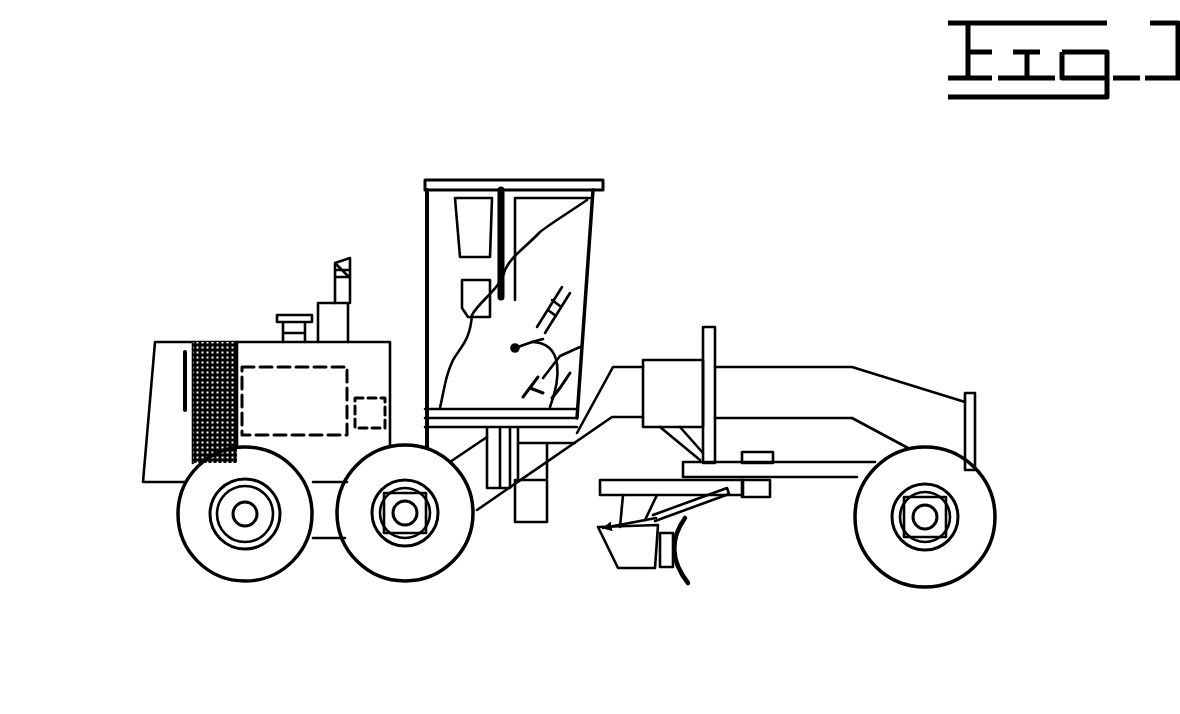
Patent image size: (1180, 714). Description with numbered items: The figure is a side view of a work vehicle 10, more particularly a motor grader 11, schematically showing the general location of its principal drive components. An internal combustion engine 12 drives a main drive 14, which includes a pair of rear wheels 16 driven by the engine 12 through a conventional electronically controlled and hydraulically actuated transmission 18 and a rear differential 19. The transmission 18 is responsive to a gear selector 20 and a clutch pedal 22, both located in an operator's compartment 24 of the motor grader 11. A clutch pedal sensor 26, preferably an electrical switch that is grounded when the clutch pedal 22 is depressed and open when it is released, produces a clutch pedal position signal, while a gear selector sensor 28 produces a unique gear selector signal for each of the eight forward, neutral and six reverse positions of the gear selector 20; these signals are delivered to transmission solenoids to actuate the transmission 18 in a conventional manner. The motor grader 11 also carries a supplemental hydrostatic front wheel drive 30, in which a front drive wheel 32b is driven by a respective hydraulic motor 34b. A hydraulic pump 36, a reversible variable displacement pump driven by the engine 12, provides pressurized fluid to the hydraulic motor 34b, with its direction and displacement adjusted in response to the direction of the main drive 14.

The work vehicle 10 is at (792, 271).
The motor grader 11 is at (808, 367).
The internal combustion engine 12 is at (280, 367).
The main drive 14 is at (343, 570).
The rear wheels 16 is at (178, 527).
The transmission 18 is at (325, 540).
The rear differential 19 is at (403, 545).
The gear selector 20 is at (578, 313).
The clutch pedal 22 is at (583, 340).
The operator's compartment 24 is at (541, 178).
The clutch pedal sensor 26 is at (568, 377).
The gear selector sensor 28 is at (573, 297).
The supplemental hydrostatic front wheel drive 30 is at (1013, 480).
The right front drive wheel 32b is at (993, 537).
The hydraulic motor 34b is at (925, 545).
The hydraulic pump 36 is at (394, 372).